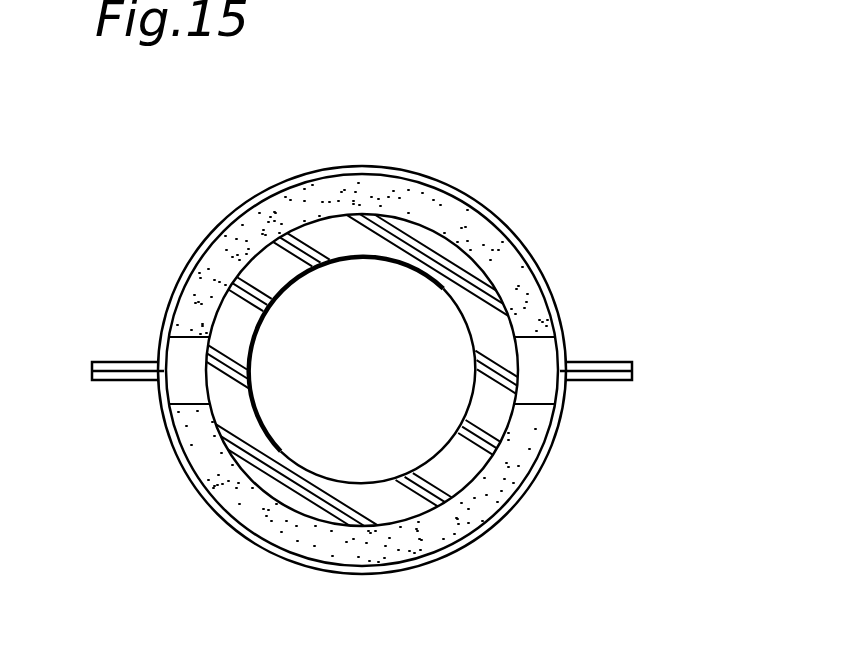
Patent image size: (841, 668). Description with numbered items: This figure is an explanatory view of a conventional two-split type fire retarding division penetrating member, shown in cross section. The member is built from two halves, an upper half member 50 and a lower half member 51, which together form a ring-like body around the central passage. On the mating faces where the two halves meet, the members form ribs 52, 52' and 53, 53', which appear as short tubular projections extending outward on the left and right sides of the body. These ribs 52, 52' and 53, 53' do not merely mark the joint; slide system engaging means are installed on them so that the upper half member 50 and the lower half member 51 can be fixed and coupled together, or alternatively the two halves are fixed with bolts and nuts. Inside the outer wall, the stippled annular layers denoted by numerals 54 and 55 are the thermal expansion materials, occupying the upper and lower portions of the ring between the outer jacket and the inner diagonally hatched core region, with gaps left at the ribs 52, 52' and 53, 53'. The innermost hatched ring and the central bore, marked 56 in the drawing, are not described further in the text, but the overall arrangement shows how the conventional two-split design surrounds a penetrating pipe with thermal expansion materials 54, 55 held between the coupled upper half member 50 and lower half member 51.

The upper half member 50 is at (467, 198).
The lower half member 51 is at (485, 533).
The rib 52 is at (115, 315).
The rib 53 is at (108, 418).
The rib 52' is at (627, 318).
The rib 53' is at (629, 418).
The thermal expansion material 54 is at (327, 198).
The thermal expansion material 55 is at (303, 535).
The helical reinforcement around core pipe 56 is at (453, 285).